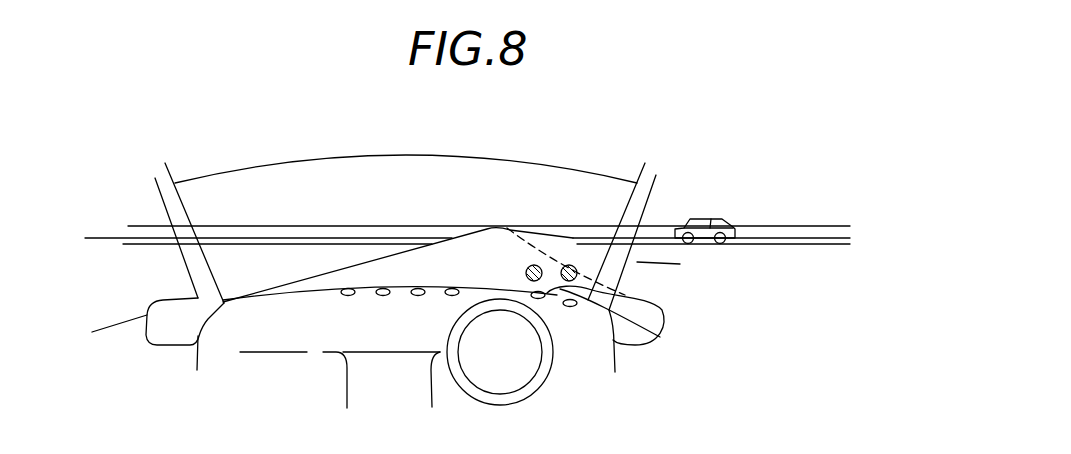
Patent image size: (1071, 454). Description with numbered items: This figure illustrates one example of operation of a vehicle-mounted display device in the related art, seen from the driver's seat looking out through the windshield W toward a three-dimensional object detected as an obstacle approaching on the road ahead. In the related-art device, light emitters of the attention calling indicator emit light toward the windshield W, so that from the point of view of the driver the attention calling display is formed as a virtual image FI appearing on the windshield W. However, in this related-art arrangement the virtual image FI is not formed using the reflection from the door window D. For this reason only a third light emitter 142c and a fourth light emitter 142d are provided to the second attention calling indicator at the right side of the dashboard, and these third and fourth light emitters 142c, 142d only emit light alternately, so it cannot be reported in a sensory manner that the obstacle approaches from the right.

The virtual image FI is at (533, 265).
The windshield W is at (553, 187).
The door window D is at (638, 273).
The fourth light emitter 142d is at (663, 313).
The third light emitter 142c is at (659, 340).